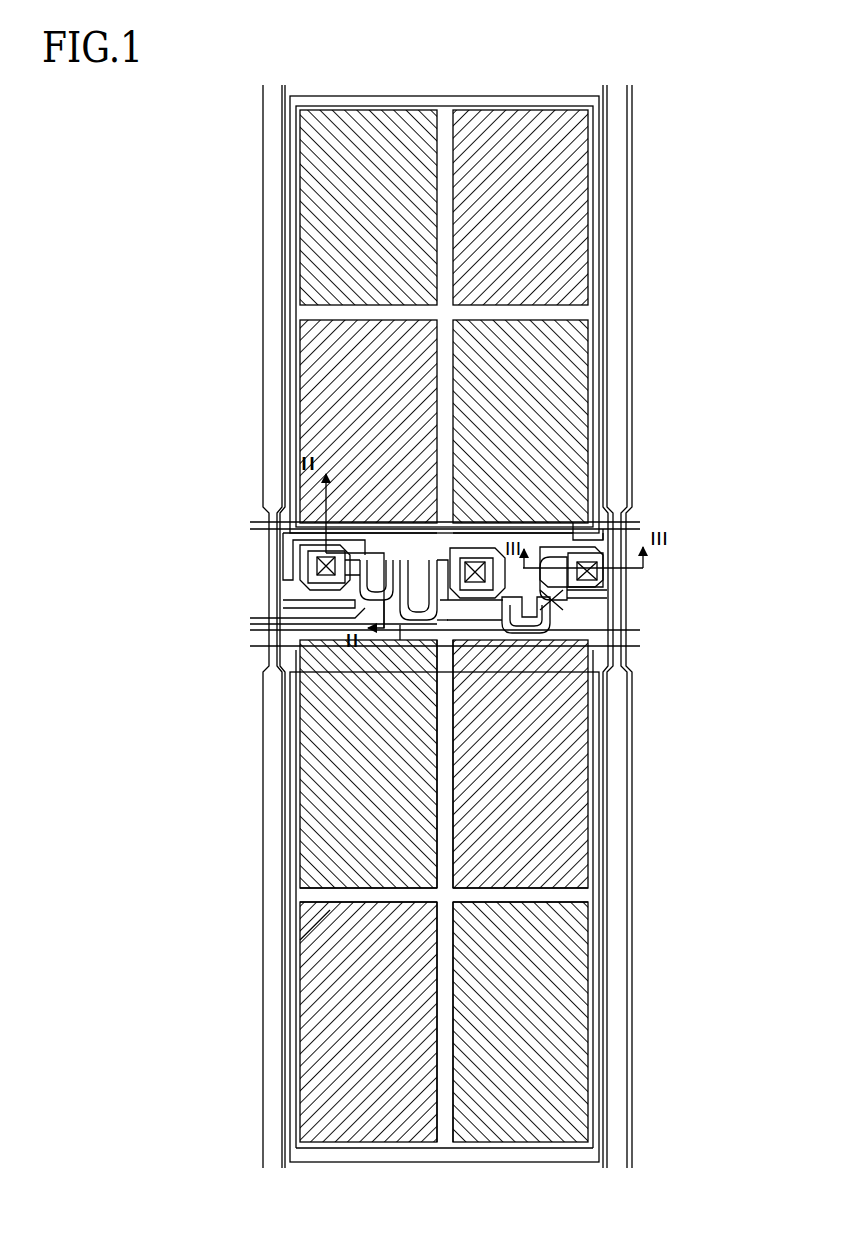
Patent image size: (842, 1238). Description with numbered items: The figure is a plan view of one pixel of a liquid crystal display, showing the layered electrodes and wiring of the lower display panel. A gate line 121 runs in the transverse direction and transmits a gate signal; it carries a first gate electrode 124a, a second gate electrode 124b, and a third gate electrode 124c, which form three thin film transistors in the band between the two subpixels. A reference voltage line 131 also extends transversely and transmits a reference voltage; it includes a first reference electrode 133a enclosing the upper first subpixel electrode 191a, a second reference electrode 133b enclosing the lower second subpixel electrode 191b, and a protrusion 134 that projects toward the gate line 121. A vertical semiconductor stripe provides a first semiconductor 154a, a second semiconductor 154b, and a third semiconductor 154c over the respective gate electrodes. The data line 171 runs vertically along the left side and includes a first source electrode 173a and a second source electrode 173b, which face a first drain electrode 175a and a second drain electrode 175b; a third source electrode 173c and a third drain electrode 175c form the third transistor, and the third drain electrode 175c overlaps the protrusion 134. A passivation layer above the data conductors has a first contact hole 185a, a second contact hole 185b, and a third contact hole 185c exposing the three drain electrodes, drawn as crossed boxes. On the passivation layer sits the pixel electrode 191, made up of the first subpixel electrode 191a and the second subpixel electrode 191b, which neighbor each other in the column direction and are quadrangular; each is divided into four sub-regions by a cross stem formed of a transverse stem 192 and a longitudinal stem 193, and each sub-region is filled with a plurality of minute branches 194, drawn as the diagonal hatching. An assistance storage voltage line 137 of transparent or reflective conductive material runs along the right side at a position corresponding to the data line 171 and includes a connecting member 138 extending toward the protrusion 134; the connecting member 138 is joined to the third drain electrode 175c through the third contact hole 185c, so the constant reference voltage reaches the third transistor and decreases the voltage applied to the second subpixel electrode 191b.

The gate line 121 is at (268, 630).
The first gate electrode 124a is at (400, 542).
The second gate electrode 124b is at (432, 548).
The third gate electrode 124c is at (598, 650).
The reference voltage line 131 is at (300, 522).
The first reference electrode 133a is at (600, 452).
The second reference electrode 133b is at (605, 940).
The protrusion 134 is at (640, 563).
The assistance storage voltage line 137 is at (633, 390).
The connecting member 138 is at (615, 538).
The first semiconductor 154a is at (372, 585).
The second semiconductor 154b is at (420, 641).
The third semiconductor 154c is at (552, 614).
The data line 171 is at (263, 262).
The first source electrode 173a is at (300, 640).
The second source electrode 173b is at (432, 602).
The third source electrode 173c is at (590, 595).
The first drain electrode 175a is at (318, 550).
The second drain electrode 175b is at (385, 602).
The third drain electrode 175c is at (560, 604).
The first contact hole 185a is at (318, 566).
The second contact hole 185b is at (480, 560).
The third contact hole 185c is at (598, 570).
The pixel electrode 191 is at (134, 158).
The first subpixel electrode 191a is at (295, 381).
The second subpixel electrode 191b is at (295, 836).
The transverse stem 192 is at (320, 882).
The longitudinal stem 193 is at (445, 993).
The minute branches 194 is at (330, 944).